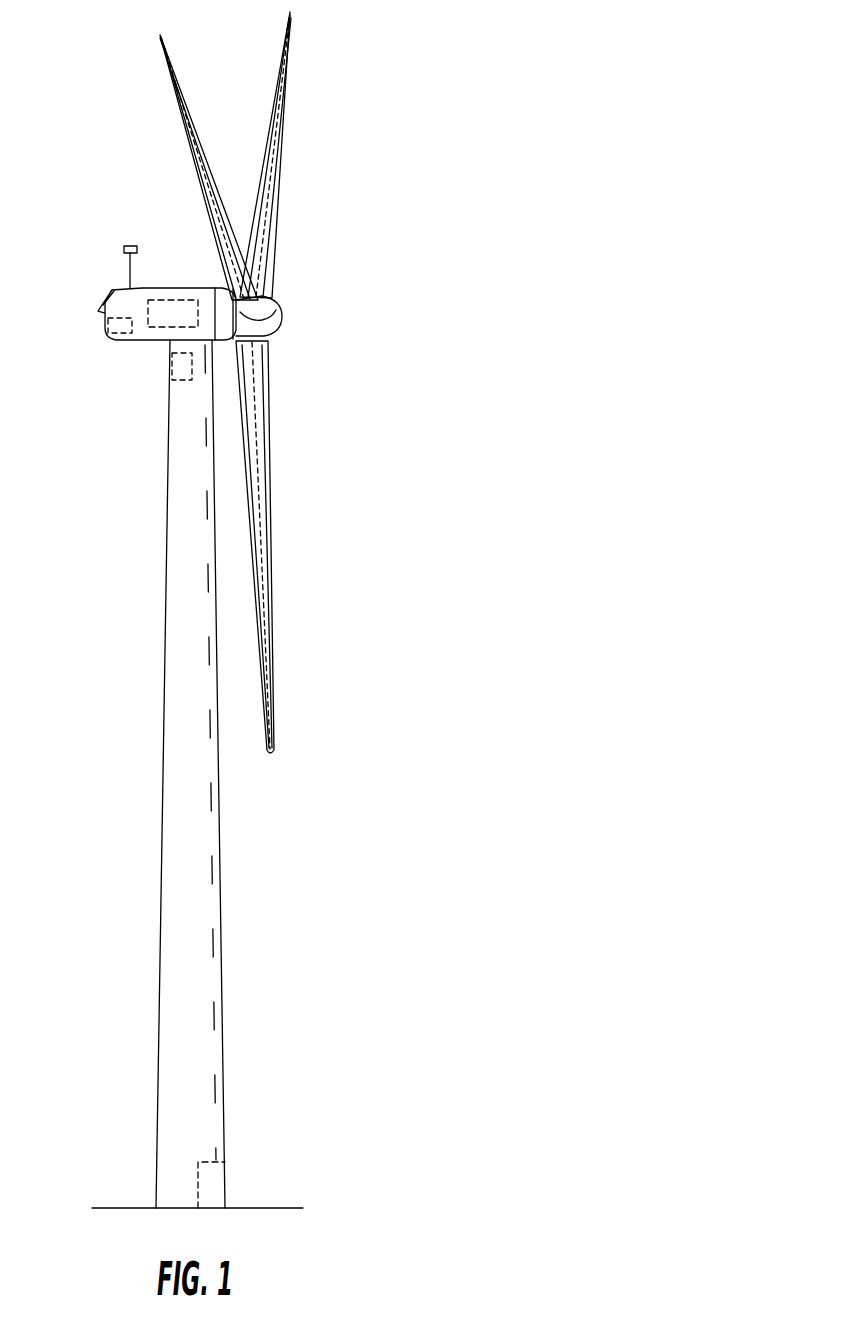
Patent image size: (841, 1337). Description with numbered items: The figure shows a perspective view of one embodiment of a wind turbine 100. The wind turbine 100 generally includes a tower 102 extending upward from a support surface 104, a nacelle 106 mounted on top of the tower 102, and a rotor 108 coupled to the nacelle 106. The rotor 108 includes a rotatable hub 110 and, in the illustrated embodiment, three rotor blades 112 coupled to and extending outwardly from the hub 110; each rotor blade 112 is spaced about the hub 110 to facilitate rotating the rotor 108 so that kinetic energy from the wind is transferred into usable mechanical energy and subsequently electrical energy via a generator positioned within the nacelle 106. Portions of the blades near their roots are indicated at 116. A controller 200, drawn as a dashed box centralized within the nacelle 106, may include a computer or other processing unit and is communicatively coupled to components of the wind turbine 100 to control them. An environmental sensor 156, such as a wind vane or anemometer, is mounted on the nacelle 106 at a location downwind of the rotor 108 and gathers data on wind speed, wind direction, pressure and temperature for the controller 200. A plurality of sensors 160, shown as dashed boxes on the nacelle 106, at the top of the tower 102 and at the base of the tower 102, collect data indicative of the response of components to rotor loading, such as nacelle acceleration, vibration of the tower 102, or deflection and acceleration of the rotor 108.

The wind turbine 100 is at (452, 133).
The tower 102 is at (203, 846).
The support surface 104 is at (135, 1208).
The nacelle 106 is at (140, 343).
The rotor 108 is at (324, 266).
The rotatable hub 110 is at (280, 308).
The rotor blade 112 is at (247, 118).
The blade root/pitch portion 116 is at (207, 185).
The environmental sensor 156 is at (123, 275).
The sensors 160 is at (118, 327).
The controller 200 is at (177, 300).